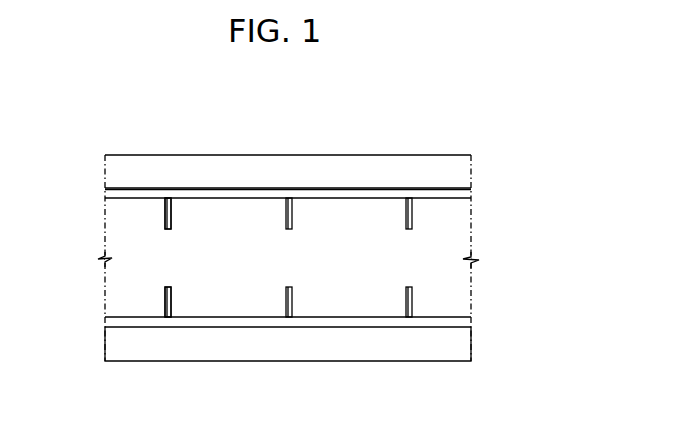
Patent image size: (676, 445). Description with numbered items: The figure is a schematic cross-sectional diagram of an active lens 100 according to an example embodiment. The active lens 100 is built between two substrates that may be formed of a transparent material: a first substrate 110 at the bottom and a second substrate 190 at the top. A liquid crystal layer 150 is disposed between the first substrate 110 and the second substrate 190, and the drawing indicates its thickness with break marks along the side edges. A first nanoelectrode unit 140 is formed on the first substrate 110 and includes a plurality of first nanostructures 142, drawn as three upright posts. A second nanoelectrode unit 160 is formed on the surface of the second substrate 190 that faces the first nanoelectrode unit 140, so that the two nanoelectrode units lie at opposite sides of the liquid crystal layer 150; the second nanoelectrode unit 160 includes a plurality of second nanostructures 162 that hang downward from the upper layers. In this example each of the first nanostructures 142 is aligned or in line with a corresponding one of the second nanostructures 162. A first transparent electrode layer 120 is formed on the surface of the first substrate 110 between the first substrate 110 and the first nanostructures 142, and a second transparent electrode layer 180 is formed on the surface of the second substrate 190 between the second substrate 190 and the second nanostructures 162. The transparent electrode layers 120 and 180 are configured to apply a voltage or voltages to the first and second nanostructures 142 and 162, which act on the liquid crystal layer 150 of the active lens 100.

The active lens 100 is at (293, 221).
The first substrate 110 is at (468, 345).
The first transparent electrode layer 120 is at (468, 321).
The first nanoelectrode unit 140 is at (413, 299).
The first nanostructures 142 is at (165, 300).
The liquid crystal layer 150 is at (468, 275).
The second nanoelectrode unit 160 is at (413, 218).
The second nanostructures 162 is at (165, 218).
The second transparent electrode layer 180 is at (468, 193).
The second substrate 190 is at (471, 168).